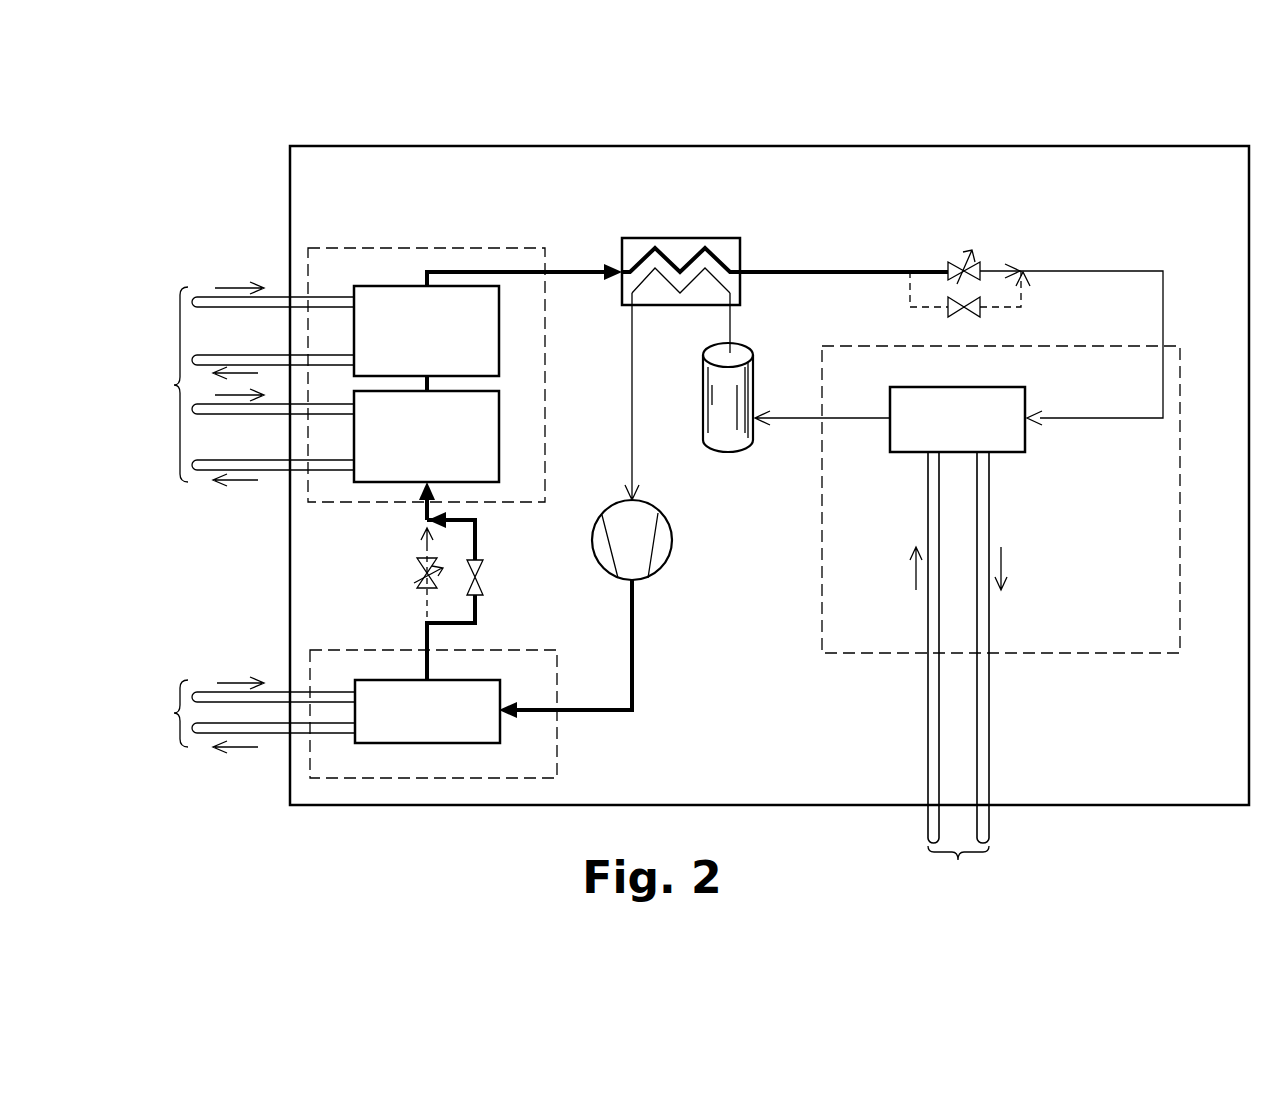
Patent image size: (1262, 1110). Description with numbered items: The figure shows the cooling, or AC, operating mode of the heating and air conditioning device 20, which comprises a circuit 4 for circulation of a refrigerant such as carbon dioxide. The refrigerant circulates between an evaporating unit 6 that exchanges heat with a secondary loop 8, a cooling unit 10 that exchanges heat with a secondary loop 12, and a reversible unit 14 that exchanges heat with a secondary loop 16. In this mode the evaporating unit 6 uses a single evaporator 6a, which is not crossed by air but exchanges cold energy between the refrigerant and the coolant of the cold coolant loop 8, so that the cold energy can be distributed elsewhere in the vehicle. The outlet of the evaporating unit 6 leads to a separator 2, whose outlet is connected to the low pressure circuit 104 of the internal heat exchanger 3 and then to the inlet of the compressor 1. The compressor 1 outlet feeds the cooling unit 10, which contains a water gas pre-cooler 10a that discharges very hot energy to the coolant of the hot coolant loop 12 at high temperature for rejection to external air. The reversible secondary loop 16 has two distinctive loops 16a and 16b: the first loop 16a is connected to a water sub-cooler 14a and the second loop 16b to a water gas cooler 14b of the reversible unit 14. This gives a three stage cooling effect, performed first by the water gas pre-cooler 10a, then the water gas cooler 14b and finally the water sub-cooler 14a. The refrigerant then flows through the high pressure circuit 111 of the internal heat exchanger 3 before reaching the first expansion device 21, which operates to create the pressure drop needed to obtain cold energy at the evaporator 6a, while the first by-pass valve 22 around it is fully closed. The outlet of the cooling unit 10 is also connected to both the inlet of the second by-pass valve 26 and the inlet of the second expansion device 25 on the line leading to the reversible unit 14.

The compressor 1 is at (665, 553).
The separator 2 is at (713, 418).
The internal heat exchanger 3 is at (718, 245).
The circuit 4 is at (1072, 270).
The evaporating unit 6 is at (1001, 499).
The evaporator 6a is at (1005, 444).
The secondary loop 8 is at (958, 670).
The cooling unit 10 is at (557, 742).
The water gas pre-cooler 10a is at (468, 715).
The secondary loop 12 is at (249, 715).
The reversible unit 14 is at (445, 248).
The water sub-cooler 14a is at (400, 295).
The water gas cooler 14b is at (380, 478).
The secondary loop 16 is at (246, 383).
The first loop 16a is at (270, 298).
The second loop 16b is at (265, 517).
The heating and air conditioning device 20 is at (769, 475).
The first expansion device 21 is at (958, 262).
The first by-pass valve 22 is at (973, 317).
The second expansion device 25 is at (420, 582).
The second by-pass valve 26 is at (483, 590).
The low pressure circuit 104 is at (658, 285).
The high pressure circuit 111 is at (638, 255).